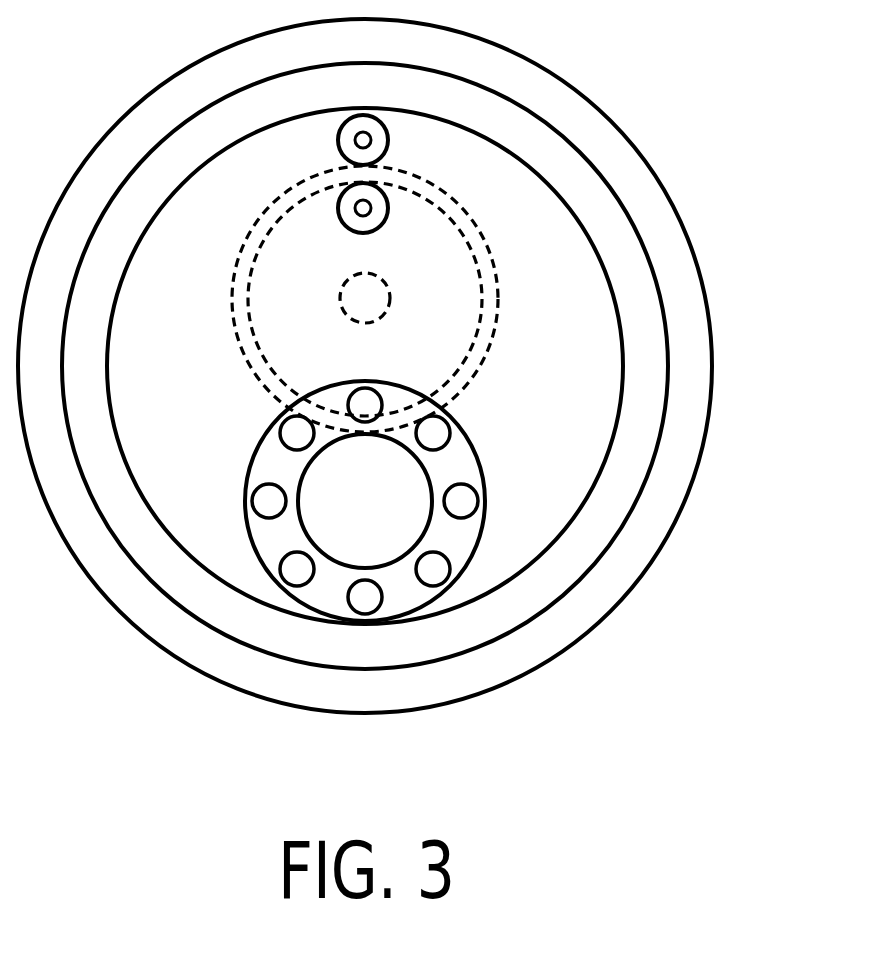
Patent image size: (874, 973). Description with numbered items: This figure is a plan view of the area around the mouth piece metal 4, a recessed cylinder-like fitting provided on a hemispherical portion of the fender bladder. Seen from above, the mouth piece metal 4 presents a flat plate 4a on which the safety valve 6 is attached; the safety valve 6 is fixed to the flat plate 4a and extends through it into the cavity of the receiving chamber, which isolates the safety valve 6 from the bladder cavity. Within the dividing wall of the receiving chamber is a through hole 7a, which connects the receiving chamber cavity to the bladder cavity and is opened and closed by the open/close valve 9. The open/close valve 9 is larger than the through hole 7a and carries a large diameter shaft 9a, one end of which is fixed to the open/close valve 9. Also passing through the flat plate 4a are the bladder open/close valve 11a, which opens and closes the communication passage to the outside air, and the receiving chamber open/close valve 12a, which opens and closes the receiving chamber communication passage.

The mouth piece metal 4 is at (662, 185).
The flat plate 4a is at (208, 522).
The safety valve 6 is at (315, 488).
The through hole 7a is at (250, 312).
The open/close valve 9 is at (492, 302).
The large diameter shaft 9a is at (358, 298).
The bladder open/close valve 11a is at (350, 140).
The receiving chamber open/close valve 12a is at (375, 208).